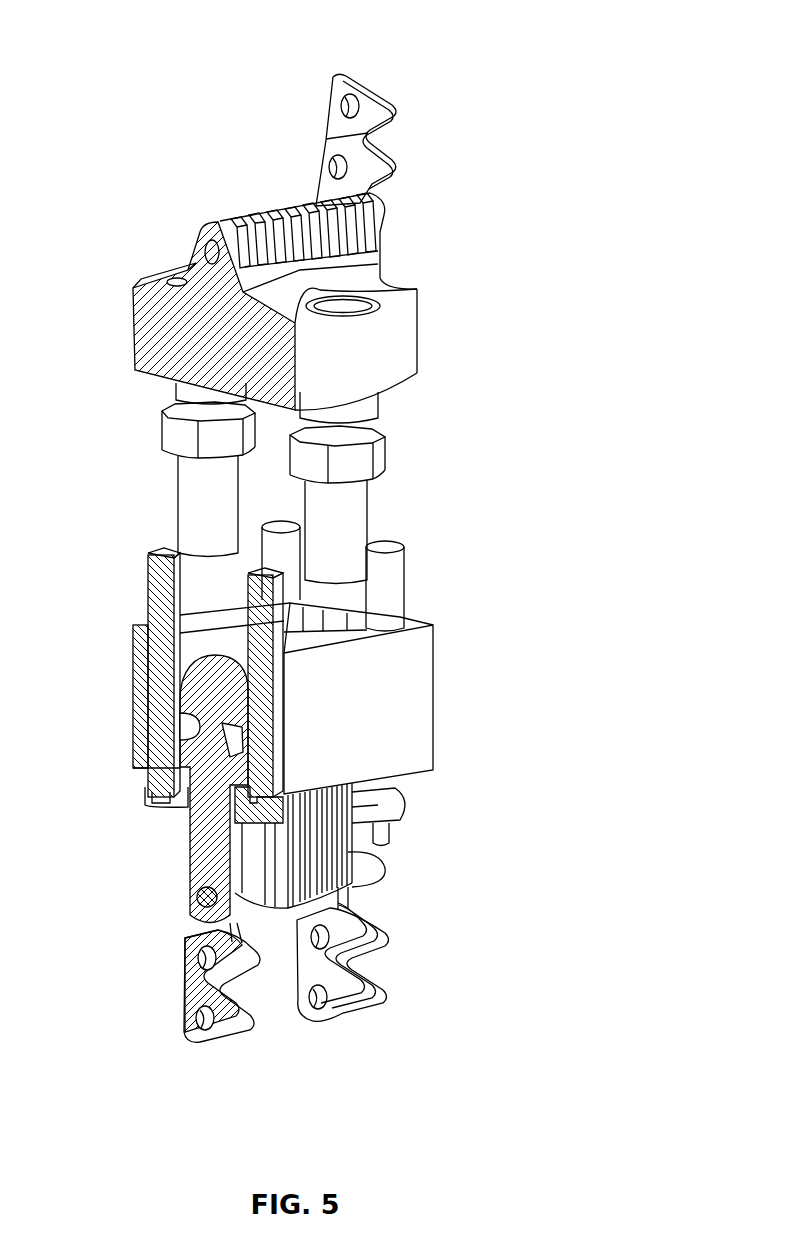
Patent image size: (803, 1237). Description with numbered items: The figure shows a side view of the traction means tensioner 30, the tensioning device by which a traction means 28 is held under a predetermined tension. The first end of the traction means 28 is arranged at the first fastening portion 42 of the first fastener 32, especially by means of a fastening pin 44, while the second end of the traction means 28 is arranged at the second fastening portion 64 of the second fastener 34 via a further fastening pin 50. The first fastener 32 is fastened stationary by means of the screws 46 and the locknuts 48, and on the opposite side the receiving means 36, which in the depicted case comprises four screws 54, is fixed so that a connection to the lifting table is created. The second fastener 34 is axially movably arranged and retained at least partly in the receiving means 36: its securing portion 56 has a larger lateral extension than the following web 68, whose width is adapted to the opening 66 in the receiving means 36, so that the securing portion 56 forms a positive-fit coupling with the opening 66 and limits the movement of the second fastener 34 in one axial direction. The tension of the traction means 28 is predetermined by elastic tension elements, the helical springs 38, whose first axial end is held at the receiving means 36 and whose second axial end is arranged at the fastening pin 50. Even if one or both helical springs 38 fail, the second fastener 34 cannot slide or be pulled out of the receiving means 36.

The traction means 28 is at (340, 90).
The traction means tensioner 30 is at (578, 188).
The first fastener 32 is at (155, 291).
The second fastener 34 is at (317, 833).
The receiving means 36 is at (425, 700).
The helical springs 38 is at (382, 812).
The first fastening portion 42 is at (175, 283).
The fastening pin 44 is at (205, 252).
The screws 46 is at (190, 510).
The locknuts 48 is at (163, 438).
The fastening pin 50 is at (195, 893).
The screws 54 is at (155, 580).
The securing portion 56 is at (210, 682).
The second fastening portion 64 is at (307, 870).
The opening 66 is at (205, 768).
The web 68 is at (212, 762).